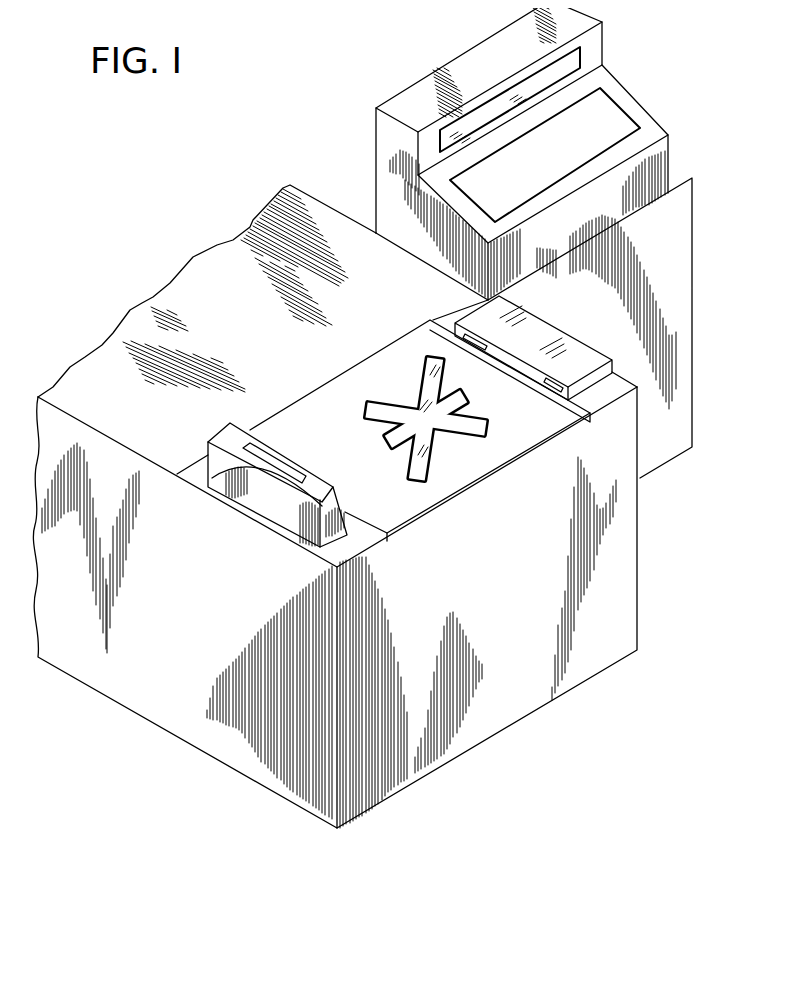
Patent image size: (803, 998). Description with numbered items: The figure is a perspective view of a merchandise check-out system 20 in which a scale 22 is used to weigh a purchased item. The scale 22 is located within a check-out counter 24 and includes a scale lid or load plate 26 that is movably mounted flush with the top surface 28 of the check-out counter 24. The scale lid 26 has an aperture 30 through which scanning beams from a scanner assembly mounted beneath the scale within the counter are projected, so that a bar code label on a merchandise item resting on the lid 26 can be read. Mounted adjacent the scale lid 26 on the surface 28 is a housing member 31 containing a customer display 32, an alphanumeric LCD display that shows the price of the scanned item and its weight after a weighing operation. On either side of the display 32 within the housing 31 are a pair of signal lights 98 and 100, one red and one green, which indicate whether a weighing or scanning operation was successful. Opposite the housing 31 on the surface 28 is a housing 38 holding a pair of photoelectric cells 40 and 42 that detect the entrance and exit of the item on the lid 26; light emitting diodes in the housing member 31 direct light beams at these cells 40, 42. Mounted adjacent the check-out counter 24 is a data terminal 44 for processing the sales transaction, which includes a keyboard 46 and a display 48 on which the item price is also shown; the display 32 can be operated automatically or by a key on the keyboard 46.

The merchandise check-out system 20 is at (345, 190).
The scale 22 is at (340, 372).
The check-out counter 24 is at (630, 582).
The scale lid 26 is at (422, 505).
The top surface 28 is at (137, 320).
The aperture 30 is at (470, 416).
The housing member 31 is at (255, 495).
The customer display 32 is at (257, 458).
The housing 38 is at (543, 328).
The photoelectric cell 40 is at (460, 322).
The photoelectric cell 42 is at (548, 381).
The terminal 44 is at (657, 122).
The keyboard 46 is at (605, 107).
The display 48 is at (572, 57).
The signal light 98 is at (227, 433).
The signal light 100 is at (317, 490).